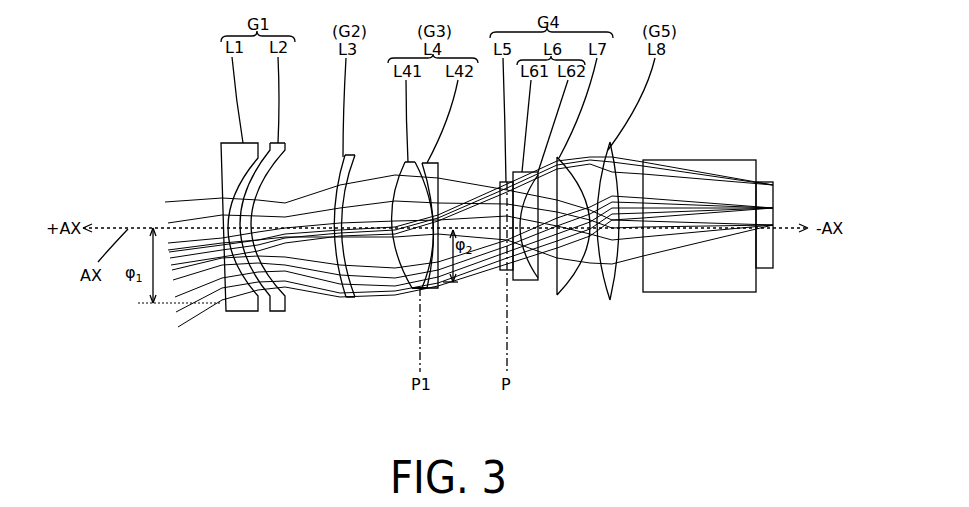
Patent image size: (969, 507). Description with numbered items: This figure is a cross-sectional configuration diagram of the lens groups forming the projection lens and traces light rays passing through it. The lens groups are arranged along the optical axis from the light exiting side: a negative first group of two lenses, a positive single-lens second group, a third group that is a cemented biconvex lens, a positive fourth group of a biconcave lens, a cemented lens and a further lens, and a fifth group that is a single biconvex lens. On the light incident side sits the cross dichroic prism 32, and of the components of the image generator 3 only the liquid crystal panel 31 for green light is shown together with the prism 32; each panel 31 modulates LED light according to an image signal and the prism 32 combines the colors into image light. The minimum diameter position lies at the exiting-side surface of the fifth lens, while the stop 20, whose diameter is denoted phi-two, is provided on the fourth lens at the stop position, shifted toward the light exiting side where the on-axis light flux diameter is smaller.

The image generator 3 is at (721, 266).
The stop 20 is at (420, 283).
The liquid crystal panel 31 is at (773, 255).
The cross dichroic prism 32 is at (730, 292).